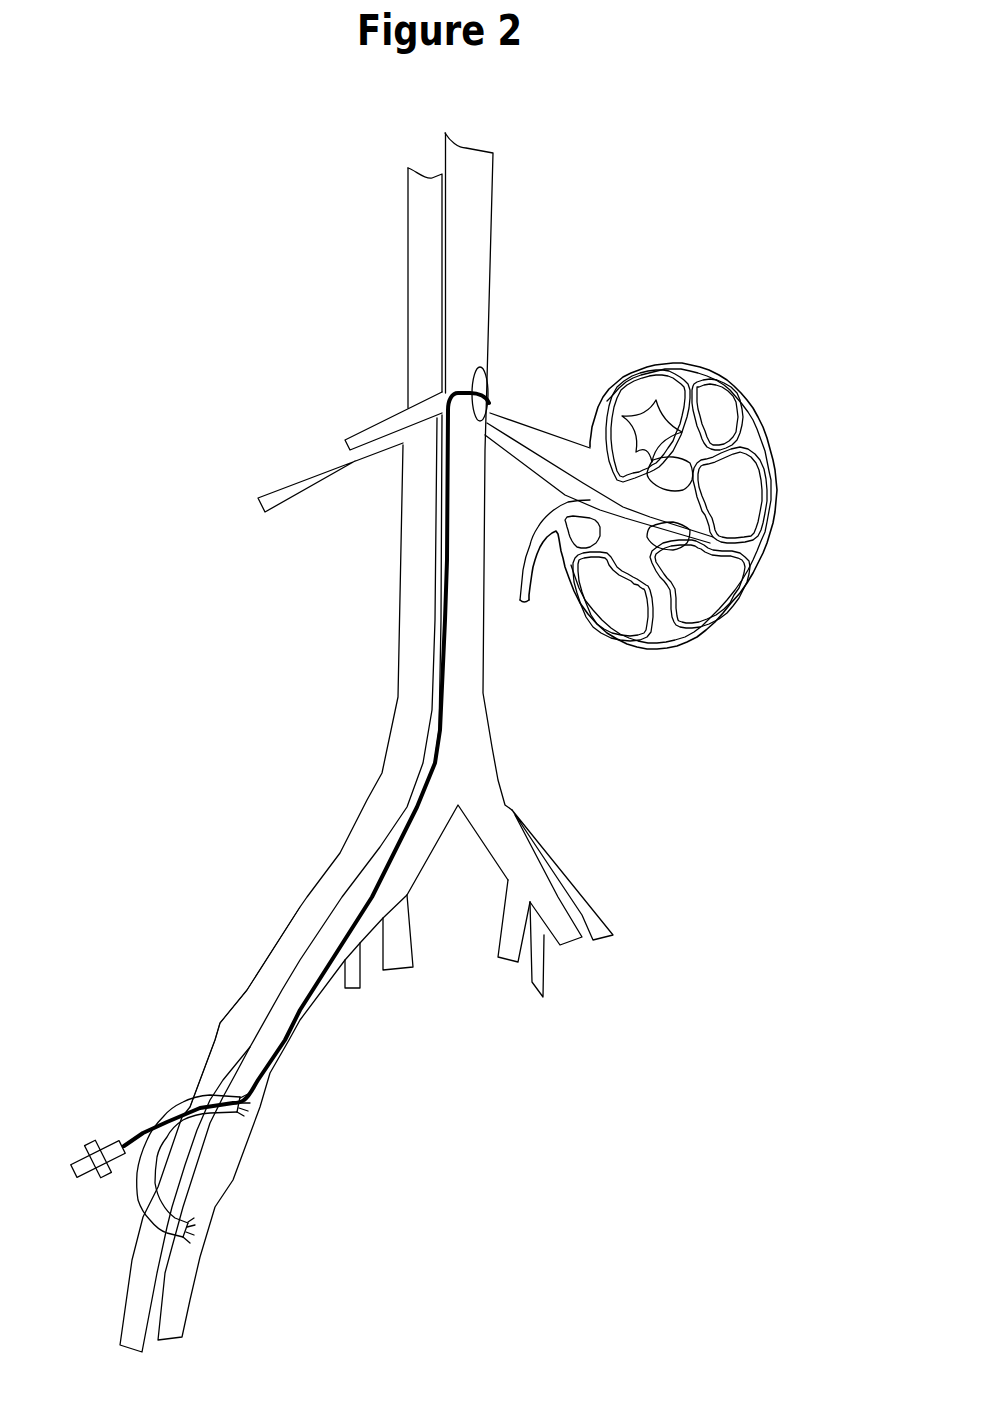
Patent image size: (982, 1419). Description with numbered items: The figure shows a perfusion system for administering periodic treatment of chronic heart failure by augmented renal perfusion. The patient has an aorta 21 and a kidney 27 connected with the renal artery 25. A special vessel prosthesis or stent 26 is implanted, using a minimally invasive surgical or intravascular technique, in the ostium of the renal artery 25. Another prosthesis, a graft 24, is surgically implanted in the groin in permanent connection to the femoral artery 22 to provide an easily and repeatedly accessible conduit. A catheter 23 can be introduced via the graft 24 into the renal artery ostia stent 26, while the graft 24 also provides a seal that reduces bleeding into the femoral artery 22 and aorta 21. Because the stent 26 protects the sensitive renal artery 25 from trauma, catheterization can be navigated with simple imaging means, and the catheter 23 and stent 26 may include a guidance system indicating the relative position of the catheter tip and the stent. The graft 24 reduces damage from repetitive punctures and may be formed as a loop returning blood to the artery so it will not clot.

The aorta 21 is at (470, 318).
The femoral artery 22 is at (295, 937).
The catheter 23 is at (437, 757).
The graft 24 is at (147, 1123).
The renal artery 25 is at (515, 428).
The stent 26 is at (495, 390).
The kidney 27 is at (745, 397).